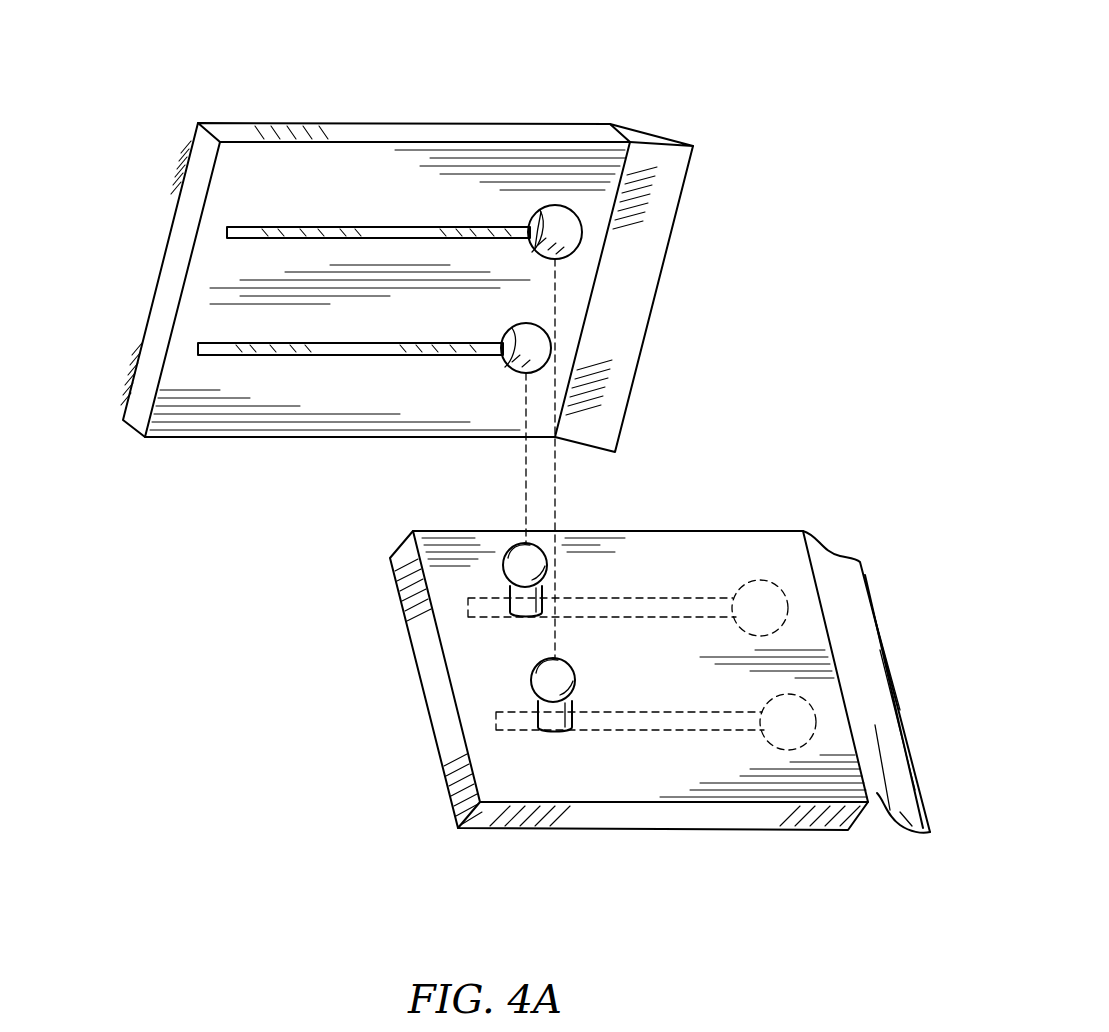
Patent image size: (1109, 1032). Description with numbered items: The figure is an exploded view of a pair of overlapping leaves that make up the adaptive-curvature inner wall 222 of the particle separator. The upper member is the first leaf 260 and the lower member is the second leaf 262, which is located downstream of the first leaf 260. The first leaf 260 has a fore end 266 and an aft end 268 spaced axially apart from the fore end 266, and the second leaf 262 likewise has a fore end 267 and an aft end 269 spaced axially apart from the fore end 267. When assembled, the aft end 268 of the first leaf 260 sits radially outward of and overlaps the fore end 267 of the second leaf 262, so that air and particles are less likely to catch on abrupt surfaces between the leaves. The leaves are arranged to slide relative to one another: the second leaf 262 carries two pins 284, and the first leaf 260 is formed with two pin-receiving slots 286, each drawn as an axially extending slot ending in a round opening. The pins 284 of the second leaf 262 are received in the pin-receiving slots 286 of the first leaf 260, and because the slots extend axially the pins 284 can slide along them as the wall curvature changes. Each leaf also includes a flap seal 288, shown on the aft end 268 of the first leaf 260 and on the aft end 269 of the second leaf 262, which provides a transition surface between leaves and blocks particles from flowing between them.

The adaptive-curvature inner wall 222 is at (683, 58).
The first leaf 260 is at (496, 124).
The second leaf 262 is at (710, 553).
The fore end 266 is at (149, 267).
The fore end 267 is at (420, 753).
The aft end 268 is at (670, 280).
The aft end 269 is at (893, 665).
The pins 284 is at (503, 568).
The pin-receiving slots 286 is at (342, 226).
The flap seals 288 is at (623, 363).